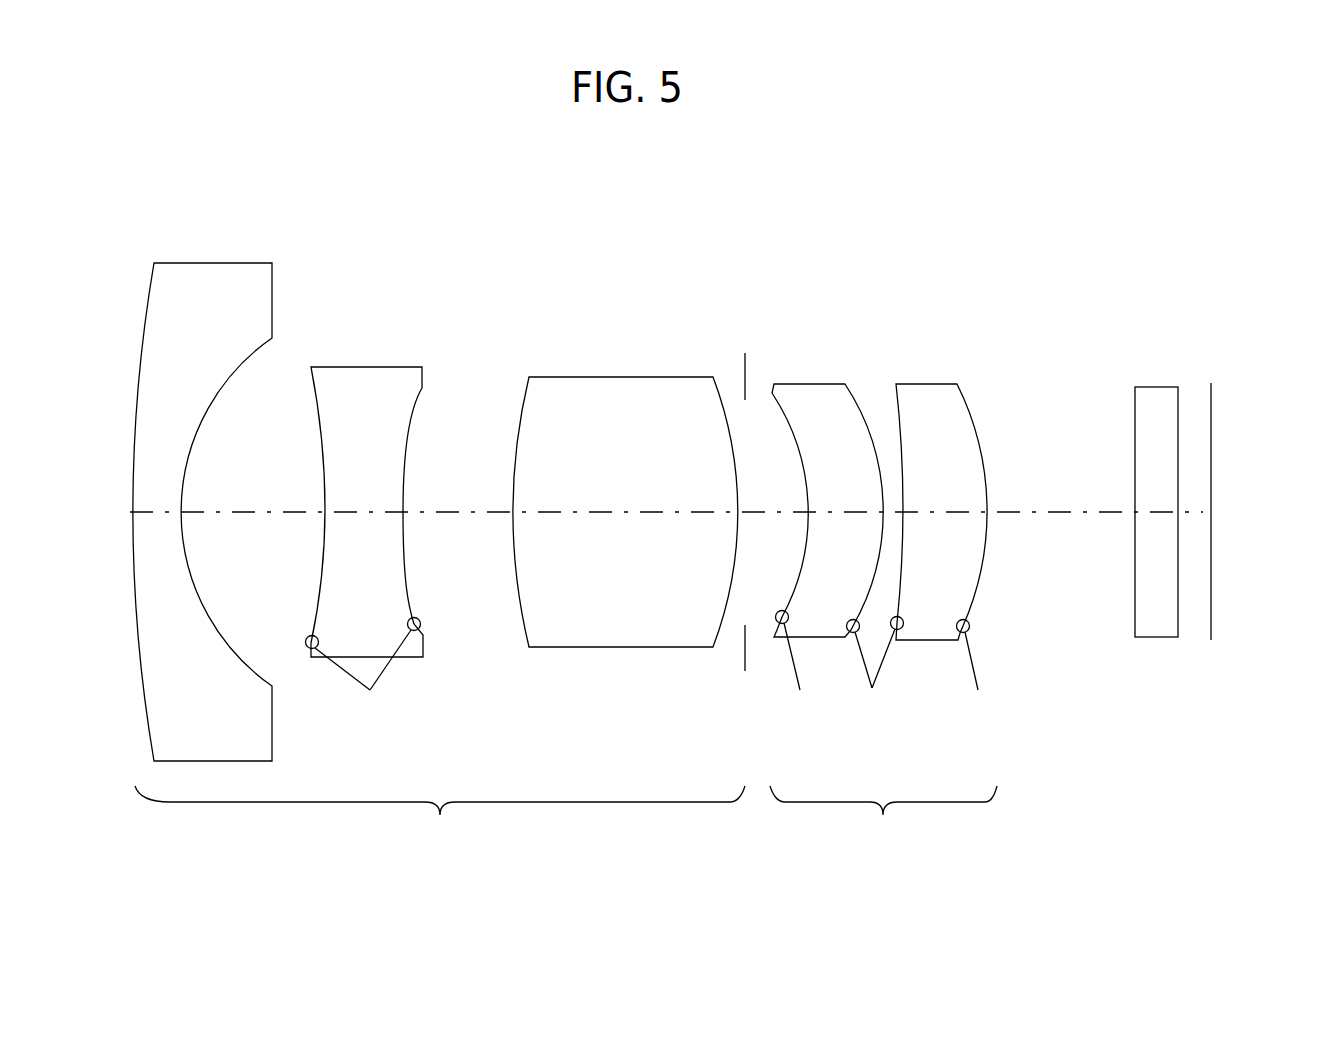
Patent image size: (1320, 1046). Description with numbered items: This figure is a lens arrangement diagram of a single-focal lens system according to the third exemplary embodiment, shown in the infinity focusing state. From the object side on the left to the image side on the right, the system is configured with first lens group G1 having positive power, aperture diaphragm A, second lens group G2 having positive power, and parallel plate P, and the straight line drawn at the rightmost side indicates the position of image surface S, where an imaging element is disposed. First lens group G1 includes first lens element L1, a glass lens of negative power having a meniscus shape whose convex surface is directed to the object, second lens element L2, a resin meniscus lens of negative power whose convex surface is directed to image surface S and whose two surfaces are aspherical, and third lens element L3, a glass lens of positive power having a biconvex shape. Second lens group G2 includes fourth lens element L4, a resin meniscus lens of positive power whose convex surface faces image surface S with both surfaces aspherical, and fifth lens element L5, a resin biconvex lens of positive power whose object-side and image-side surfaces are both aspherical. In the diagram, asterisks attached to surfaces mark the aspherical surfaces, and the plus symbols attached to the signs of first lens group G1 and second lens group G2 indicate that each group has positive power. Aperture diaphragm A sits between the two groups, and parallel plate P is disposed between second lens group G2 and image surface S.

The first lens element L1 is at (217, 278).
The second lens element L2 is at (360, 392).
The third lens element L3 is at (631, 394).
The fourth lens element L4 is at (815, 397).
The fifth lens element L5 is at (930, 395).
The aperture diaphragm A is at (745, 353).
The parallel plate P is at (1156, 397).
The image surface S is at (1211, 403).
The first lens group G1 is at (440, 820).
The second lens group G2 is at (883, 820).